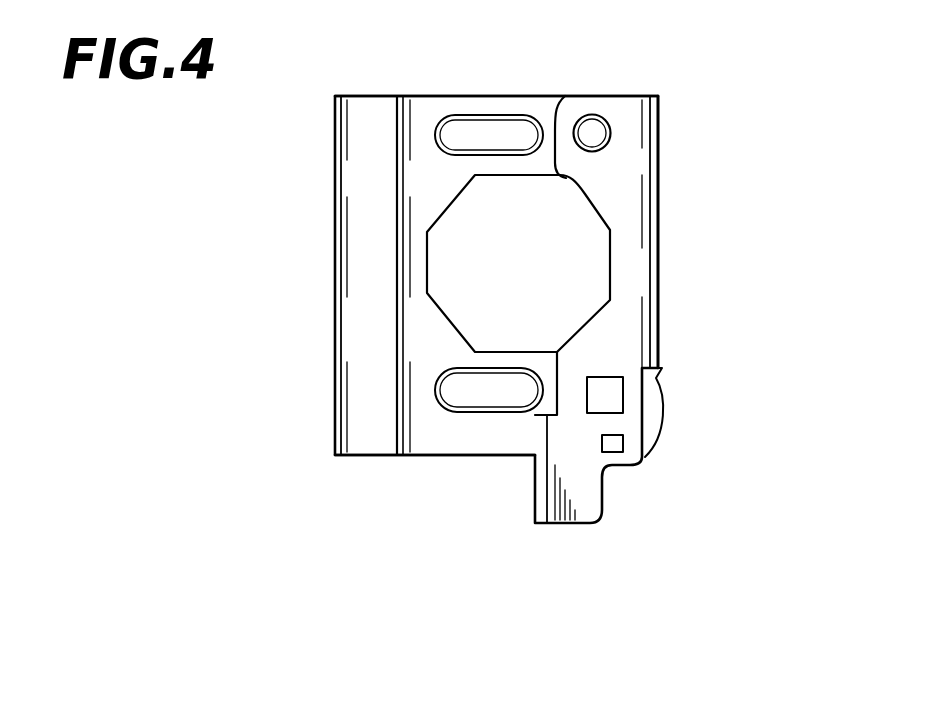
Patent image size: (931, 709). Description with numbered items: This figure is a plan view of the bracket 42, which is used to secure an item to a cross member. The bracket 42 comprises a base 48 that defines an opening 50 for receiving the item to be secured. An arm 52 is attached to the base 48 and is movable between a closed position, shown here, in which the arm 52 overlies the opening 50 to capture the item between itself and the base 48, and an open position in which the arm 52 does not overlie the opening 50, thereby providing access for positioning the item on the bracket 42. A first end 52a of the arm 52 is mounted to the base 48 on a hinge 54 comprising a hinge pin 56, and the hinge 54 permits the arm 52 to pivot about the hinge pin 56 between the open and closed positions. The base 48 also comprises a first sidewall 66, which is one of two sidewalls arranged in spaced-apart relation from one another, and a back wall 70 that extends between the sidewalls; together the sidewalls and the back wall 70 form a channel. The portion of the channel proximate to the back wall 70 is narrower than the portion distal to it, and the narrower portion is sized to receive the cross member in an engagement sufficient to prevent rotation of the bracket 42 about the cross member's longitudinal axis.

The bracket 42 is at (737, 129).
The base 48 is at (418, 455).
The opening 50 is at (497, 275).
The arm 52 is at (658, 275).
The first end 52a is at (630, 96).
The hinge 54 is at (563, 118).
The hinge pin 56 is at (592, 114).
The first sidewall 66 is at (477, 438).
The back wall 70 is at (335, 307).